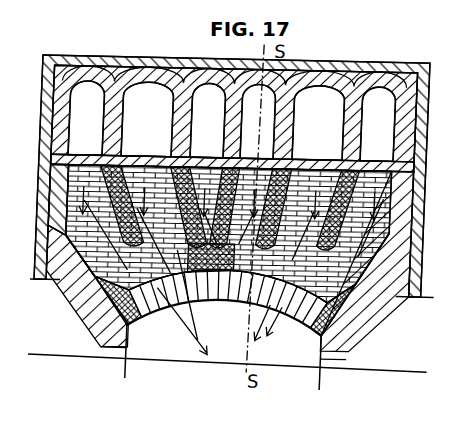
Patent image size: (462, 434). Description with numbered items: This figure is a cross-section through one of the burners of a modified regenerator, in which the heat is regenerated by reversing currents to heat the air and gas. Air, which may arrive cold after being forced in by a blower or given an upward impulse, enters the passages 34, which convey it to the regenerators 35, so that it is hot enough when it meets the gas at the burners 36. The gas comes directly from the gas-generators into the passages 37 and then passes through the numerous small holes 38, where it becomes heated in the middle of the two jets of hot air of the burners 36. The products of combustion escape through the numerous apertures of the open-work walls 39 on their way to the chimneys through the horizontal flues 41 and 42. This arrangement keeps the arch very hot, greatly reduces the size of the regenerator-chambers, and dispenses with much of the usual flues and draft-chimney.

The passages 34 is at (147, 119).
The passages 37 is at (147, 119).
The horizontal flue 42 is at (318, 122).
The horizontal flue 41 is at (318, 122).
The regenerators 35 is at (400, 194).
The burners 36 is at (166, 268).
The small holes 38 is at (121, 305).
The open-work walls 39 is at (268, 244).